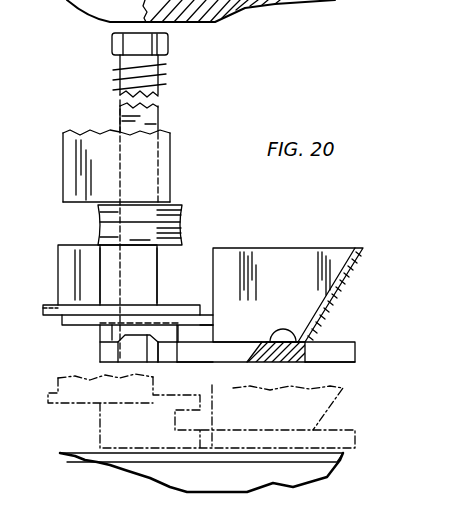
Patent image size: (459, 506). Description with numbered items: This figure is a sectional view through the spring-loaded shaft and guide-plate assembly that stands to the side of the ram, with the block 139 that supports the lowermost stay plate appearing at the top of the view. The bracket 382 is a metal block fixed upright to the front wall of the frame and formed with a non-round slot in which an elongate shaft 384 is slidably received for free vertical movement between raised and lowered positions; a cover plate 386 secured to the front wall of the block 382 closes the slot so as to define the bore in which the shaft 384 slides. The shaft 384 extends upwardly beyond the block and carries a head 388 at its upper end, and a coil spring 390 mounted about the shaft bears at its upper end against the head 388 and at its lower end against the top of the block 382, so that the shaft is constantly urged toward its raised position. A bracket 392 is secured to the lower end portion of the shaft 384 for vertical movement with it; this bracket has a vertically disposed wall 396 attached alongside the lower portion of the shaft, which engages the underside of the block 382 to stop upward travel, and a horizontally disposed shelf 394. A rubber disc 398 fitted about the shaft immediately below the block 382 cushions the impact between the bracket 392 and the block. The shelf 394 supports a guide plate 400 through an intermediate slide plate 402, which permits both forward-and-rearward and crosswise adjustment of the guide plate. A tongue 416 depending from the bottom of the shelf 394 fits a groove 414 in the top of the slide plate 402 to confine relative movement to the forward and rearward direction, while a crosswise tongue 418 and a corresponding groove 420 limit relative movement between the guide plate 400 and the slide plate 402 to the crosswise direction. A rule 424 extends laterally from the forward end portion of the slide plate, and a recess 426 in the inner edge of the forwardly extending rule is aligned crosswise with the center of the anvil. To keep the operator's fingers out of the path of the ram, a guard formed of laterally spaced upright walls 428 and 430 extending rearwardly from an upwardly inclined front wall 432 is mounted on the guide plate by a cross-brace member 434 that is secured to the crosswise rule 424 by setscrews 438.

The block 139 is at (246, 4).
The head 388 is at (168, 58).
The coil spring 390 is at (150, 95).
The elongate shaft 384 is at (158, 117).
The cover plate 386 is at (170, 150).
The bracket 382 is at (100, 168).
The rubber disc 398 is at (182, 208).
The vertically disposed wall 396 is at (75, 255).
The bracket 392 is at (162, 273).
The shelf 394 is at (178, 303).
The intermediate slide plate 402 is at (107, 328).
The elongate tongue 418 is at (120, 338).
The groove 420 is at (160, 345).
The recess 426 is at (205, 348).
The upright wall 428 is at (297, 257).
The upwardly inclined front wall 432 is at (352, 262).
The upright wall 430 is at (445, 273).
The tongue 416 is at (205, 320).
The groove 414 is at (200, 330).
The setscrews 438 is at (280, 332).
The cross-brace member 434 is at (300, 332).
The guide plate 400 is at (335, 342).
The rule 424 is at (322, 362).